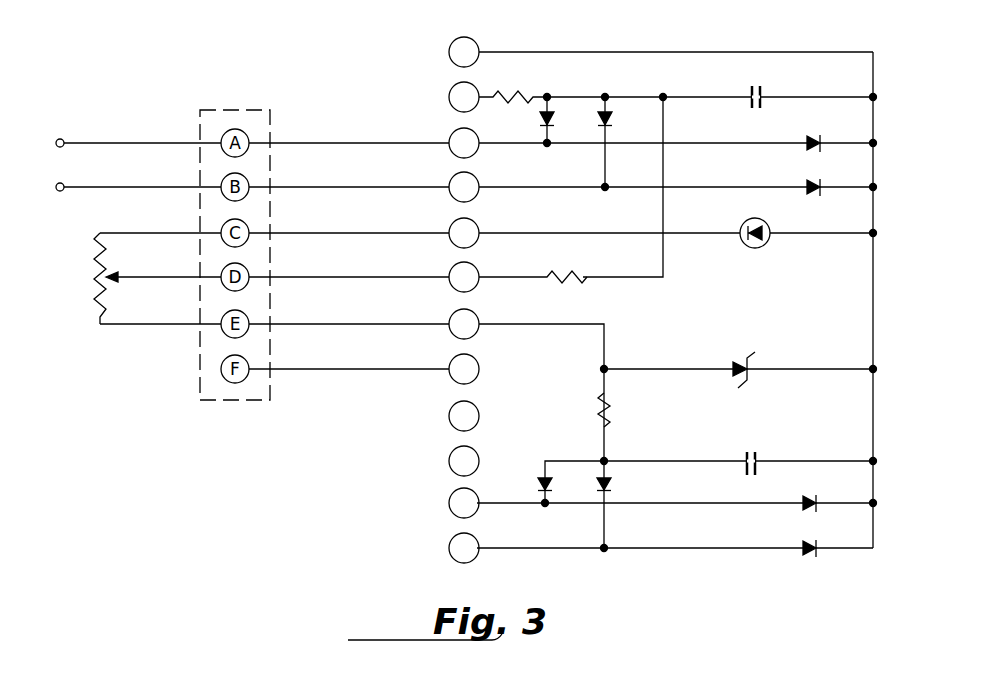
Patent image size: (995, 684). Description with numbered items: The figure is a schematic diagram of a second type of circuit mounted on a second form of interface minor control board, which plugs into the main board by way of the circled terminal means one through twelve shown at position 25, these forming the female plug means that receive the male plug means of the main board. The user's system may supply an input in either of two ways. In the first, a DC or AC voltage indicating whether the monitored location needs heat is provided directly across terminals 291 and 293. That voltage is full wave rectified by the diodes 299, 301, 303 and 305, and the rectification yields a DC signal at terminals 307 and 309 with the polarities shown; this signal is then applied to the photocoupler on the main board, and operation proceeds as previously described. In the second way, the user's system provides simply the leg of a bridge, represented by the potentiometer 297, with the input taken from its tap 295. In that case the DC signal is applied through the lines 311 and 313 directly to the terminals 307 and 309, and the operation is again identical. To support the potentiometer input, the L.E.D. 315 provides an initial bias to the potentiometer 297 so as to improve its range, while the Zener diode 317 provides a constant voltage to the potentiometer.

The position 25 is at (442, 566).
The terminal 291 is at (62, 139).
The terminal 293 is at (63, 184).
The tap 295 is at (114, 282).
The potentiometer 297 is at (88, 317).
The diode 299 is at (541, 118).
The diode 301 is at (612, 117).
The diode 303 is at (821, 134).
The diode 305 is at (810, 183).
The terminal 307 is at (477, 44).
The terminal 309 is at (452, 90).
The line 311 is at (665, 128).
The line 313 is at (873, 285).
The L.E.D. 315 is at (756, 248).
The Zener diode 317 is at (744, 354).